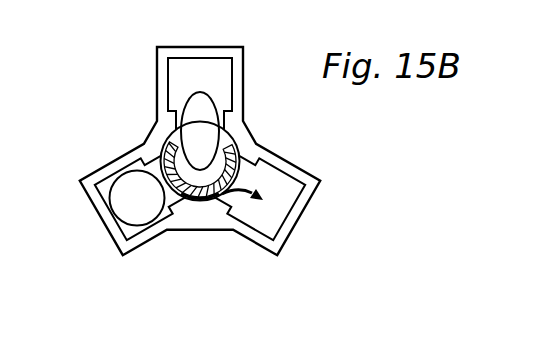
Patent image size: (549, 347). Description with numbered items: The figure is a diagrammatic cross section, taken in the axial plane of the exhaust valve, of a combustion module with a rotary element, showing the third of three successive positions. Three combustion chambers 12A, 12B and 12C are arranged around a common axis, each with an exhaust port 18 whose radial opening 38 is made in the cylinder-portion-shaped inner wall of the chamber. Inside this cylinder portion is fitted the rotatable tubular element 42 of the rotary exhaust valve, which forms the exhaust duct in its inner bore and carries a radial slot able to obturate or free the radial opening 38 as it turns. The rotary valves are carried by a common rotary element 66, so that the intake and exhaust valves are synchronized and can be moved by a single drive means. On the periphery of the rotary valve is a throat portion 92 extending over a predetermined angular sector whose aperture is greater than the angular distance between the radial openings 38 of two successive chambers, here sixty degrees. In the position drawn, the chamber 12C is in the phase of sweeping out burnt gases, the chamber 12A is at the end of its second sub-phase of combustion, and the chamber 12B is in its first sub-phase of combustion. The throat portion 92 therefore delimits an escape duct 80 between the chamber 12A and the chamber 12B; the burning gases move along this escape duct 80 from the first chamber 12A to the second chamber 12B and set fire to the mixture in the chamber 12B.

The first combustion chamber 12A is at (128, 208).
The second combustion chamber 12B is at (273, 210).
The third combustion chamber 12C is at (203, 77).
The exhaust port 18 is at (197, 120).
The radial opening 38 is at (176, 120).
The tubular element 42 is at (234, 133).
The common rotary element 66 is at (239, 139).
The escape duct 80 is at (212, 214).
The throat portion 92 is at (199, 202).